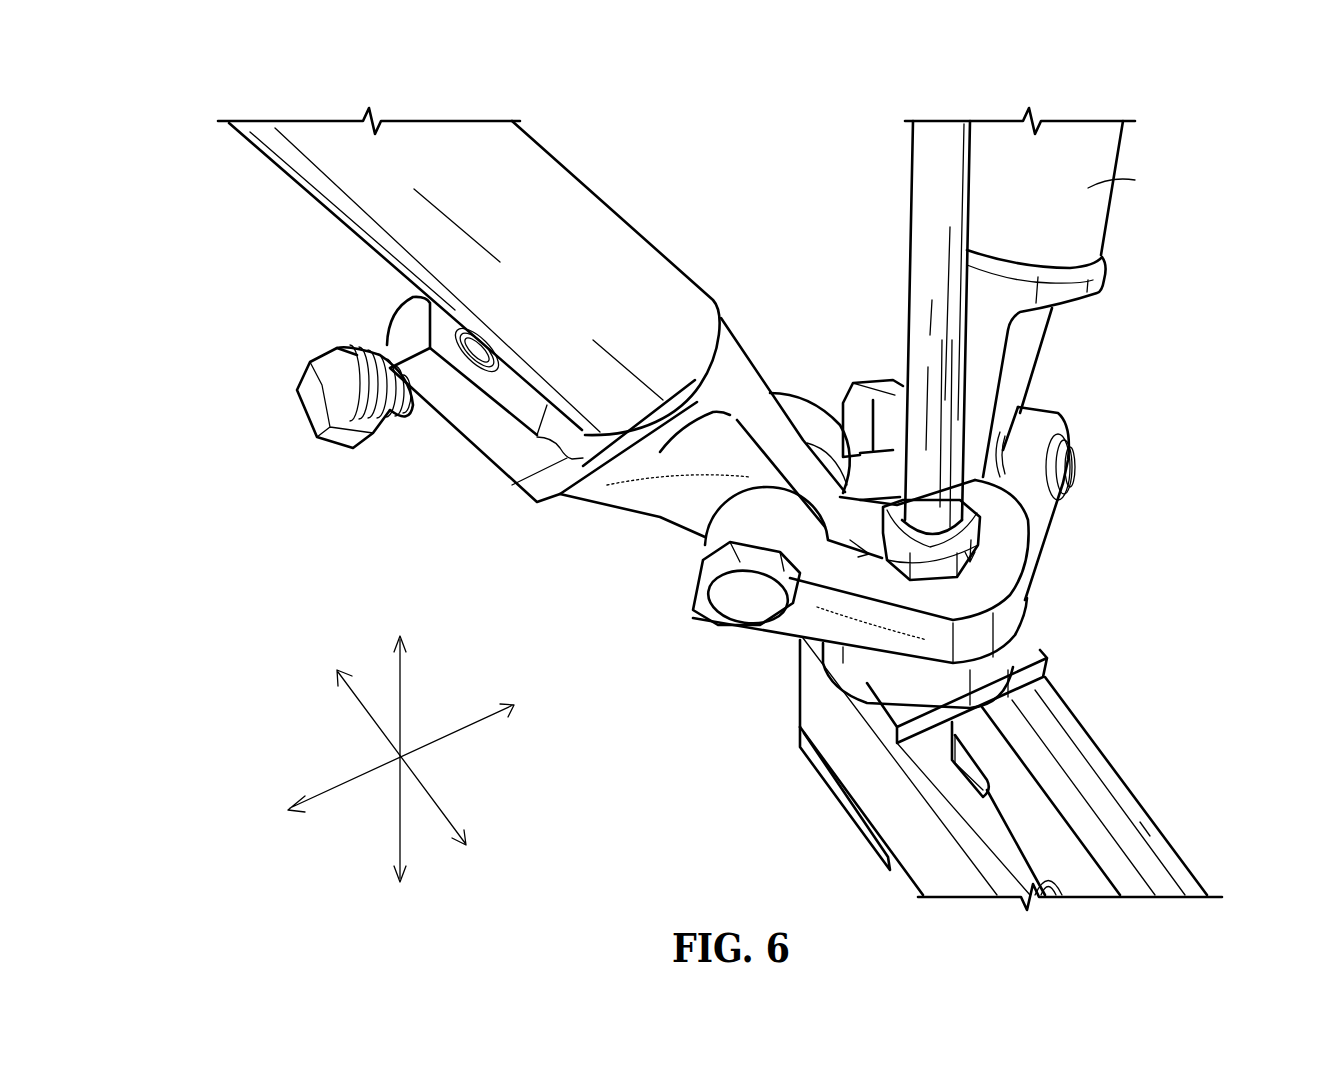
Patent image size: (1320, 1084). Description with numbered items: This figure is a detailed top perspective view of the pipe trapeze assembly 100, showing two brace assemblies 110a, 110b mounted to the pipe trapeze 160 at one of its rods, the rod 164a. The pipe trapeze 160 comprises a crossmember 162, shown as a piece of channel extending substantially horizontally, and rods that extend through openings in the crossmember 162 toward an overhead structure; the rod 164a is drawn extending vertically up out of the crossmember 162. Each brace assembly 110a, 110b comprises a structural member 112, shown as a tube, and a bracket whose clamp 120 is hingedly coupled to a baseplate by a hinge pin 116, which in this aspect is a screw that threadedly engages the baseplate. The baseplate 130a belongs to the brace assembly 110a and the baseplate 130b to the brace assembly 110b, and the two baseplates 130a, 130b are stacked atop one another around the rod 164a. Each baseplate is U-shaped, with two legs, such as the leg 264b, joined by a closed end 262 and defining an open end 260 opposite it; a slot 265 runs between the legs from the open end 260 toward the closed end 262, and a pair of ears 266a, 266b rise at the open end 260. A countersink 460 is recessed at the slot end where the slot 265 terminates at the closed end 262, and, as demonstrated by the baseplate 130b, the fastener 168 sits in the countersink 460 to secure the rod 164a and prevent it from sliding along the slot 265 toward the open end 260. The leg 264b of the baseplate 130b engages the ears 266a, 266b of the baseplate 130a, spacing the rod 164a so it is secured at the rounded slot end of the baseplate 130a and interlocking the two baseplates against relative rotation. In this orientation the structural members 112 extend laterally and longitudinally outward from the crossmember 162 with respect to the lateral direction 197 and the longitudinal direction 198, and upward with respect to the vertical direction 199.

The pipe trapeze assembly 100 is at (243, 235).
The structural member 112 is at (445, 145).
The brace assembly 110a is at (1080, 188).
The brace assembly 110b is at (548, 187).
The rod 164a is at (938, 152).
The clamp 120 is at (487, 443).
The ear 266a is at (893, 383).
The leg 264b is at (867, 490).
The slot 265 is at (1002, 422).
The ear 266b is at (1047, 433).
The hinge pin 116 is at (1075, 473).
The countersink 460 is at (973, 530).
The baseplate 130b is at (1013, 598).
The closed end 262 is at (980, 594).
The open end 260 is at (693, 595).
The fastener 168 is at (923, 577).
The baseplate 130a is at (890, 688).
The pipe trapeze 160 is at (1165, 743).
The crossmember 162 is at (1140, 822).
The vertical direction 199 is at (403, 680).
The longitudinal direction 198 is at (475, 725).
The lateral direction 197 is at (440, 805).